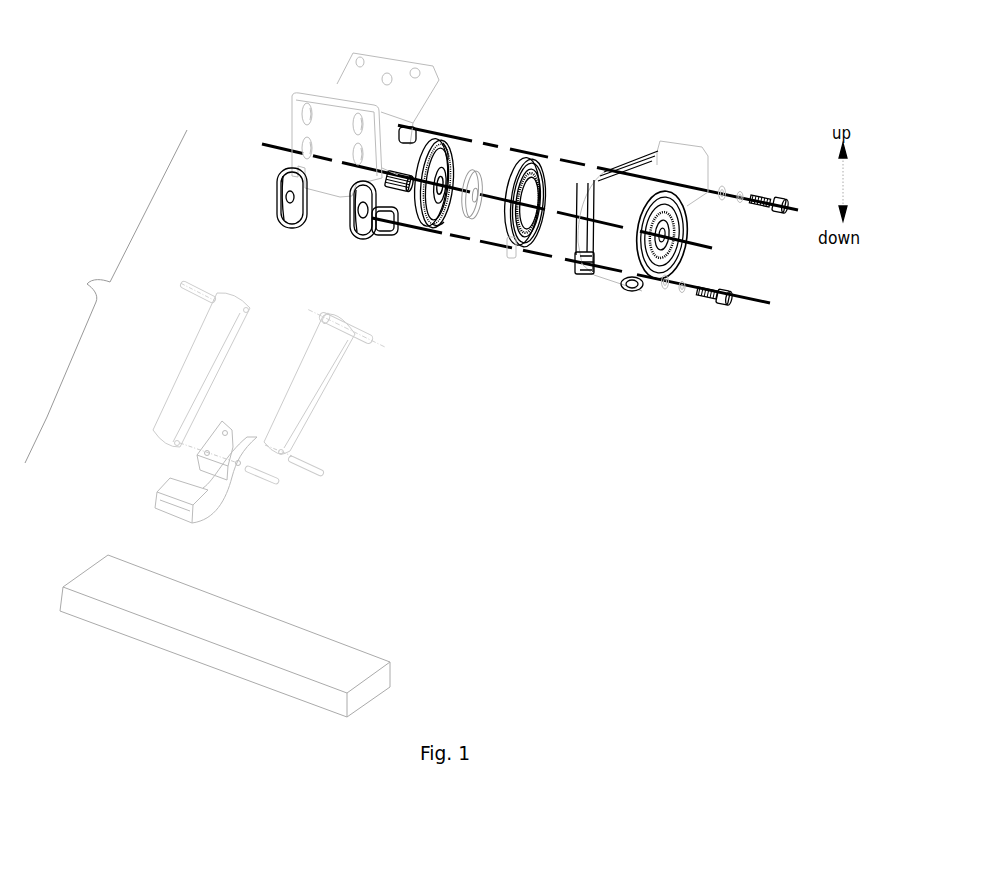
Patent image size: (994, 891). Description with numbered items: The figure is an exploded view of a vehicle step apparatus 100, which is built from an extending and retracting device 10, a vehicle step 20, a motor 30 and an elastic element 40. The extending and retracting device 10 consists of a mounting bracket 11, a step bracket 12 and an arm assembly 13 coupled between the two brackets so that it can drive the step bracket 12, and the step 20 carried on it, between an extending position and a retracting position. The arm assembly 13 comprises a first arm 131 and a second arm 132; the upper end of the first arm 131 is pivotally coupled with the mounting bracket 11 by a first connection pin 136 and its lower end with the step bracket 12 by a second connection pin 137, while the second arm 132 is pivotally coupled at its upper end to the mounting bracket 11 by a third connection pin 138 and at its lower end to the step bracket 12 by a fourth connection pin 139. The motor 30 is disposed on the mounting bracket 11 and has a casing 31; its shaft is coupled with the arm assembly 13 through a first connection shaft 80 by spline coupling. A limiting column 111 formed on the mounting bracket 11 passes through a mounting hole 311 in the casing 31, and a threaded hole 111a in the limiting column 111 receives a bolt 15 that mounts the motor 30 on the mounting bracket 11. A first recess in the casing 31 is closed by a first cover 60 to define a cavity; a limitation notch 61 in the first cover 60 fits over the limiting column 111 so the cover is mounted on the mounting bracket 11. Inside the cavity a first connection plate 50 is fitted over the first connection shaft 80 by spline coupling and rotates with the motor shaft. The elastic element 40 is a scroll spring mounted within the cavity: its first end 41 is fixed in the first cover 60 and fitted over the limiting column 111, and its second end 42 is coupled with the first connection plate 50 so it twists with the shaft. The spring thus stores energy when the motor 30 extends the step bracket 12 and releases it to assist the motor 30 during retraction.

The vehicle step apparatus 100 is at (652, 77).
The extending and retracting device 10 is at (88, 283).
The mounting bracket 11 is at (313, 169).
The limiting column 111 is at (410, 127).
The threaded hole 111a is at (398, 236).
The first connection shaft 80 is at (401, 193).
The first cover 60 is at (448, 158).
The limitation notch 61 is at (437, 141).
The first connection plate 50 is at (481, 171).
The elastic element 40 is at (541, 206).
The first end of the scroll spring 41 is at (510, 258).
The second end of the scroll spring 42 is at (543, 170).
The motor 30 is at (641, 226).
The casing 31 is at (612, 255).
The mounting hole 311 is at (590, 275).
The bolt 15 is at (765, 197).
The arm assembly 13 is at (259, 385).
The first arm 131 is at (337, 318).
The second arm 132 is at (227, 296).
The first connection pin 136 is at (365, 332).
The second connection pin 137 is at (202, 288).
The third connection pin 138 is at (307, 473).
The fourth connection pin 139 is at (263, 481).
The step bracket 12 is at (167, 510).
The vehicle step 20 is at (228, 621).